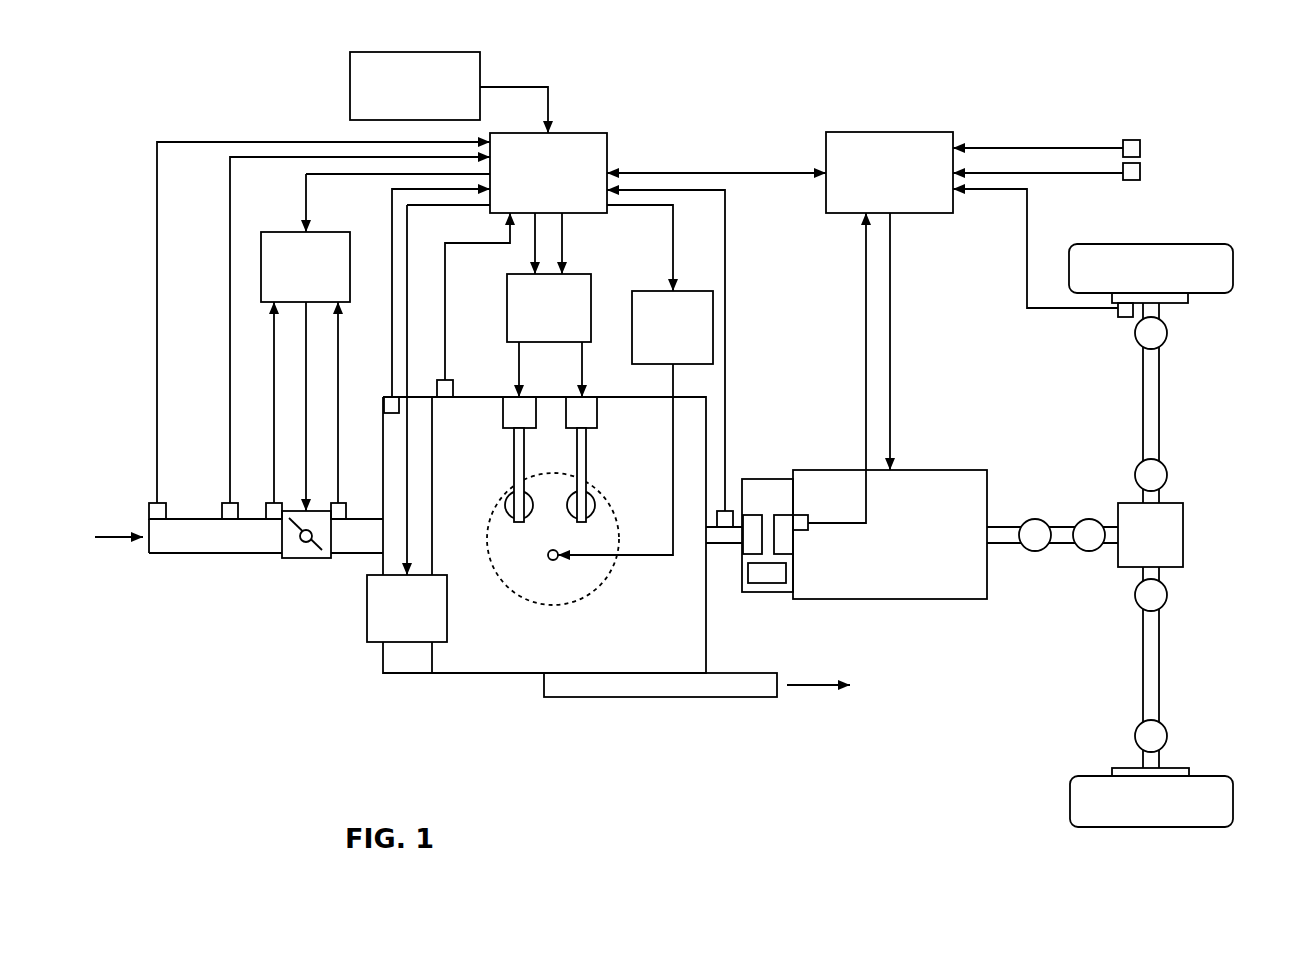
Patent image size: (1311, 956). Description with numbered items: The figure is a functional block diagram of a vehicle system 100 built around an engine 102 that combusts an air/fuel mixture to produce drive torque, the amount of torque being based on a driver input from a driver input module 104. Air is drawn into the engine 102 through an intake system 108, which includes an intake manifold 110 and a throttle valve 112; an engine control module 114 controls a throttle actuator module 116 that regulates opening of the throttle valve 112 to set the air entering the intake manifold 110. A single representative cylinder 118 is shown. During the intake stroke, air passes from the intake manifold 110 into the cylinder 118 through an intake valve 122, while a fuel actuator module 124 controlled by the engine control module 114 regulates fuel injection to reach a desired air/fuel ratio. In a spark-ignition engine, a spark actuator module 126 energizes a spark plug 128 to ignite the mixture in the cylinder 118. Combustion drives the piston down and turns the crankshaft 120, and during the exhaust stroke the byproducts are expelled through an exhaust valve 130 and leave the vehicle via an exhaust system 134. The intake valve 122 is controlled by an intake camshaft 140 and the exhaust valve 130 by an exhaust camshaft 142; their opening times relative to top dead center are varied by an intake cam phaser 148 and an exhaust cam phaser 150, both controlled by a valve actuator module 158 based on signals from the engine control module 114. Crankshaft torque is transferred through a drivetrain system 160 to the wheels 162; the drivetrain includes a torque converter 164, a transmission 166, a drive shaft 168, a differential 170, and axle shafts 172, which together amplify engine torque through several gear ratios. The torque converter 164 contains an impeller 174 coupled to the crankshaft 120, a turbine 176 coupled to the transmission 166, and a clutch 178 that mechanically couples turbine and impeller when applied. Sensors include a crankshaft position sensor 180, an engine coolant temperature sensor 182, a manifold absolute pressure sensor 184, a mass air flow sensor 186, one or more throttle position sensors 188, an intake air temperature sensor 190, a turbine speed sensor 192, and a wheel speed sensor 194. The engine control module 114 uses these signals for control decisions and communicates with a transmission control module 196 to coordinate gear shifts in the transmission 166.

The vehicle system 100 is at (175, 72).
The engine 102 is at (507, 673).
The driver input module 104 is at (350, 85).
The intake system 108 is at (265, 635).
The intake manifold 110 is at (383, 655).
The throttle valve 112 is at (306, 558).
The engine control module 114 is at (607, 140).
The throttle actuator module 116 is at (283, 232).
The cylinder 118 is at (612, 585).
The crankshaft 120 is at (727, 545).
The intake valve 122 is at (505, 505).
The fuel actuator module 124 is at (447, 620).
The spark actuator module 126 is at (645, 291).
The spark plug 128 is at (548, 555).
The exhaust valve 130 is at (595, 505).
The exhaust system 134 is at (723, 728).
The intake camshaft 140 is at (514, 460).
The exhaust camshaft 142 is at (586, 460).
The intake cam phaser 148 is at (503, 410).
The exhaust cam phaser 150 is at (597, 410).
The valve actuator module 158 is at (507, 305).
The drivetrain system 160 is at (865, 623).
The wheels 162 is at (1188, 298).
The torque converter 164 is at (790, 479).
The transmission 166 is at (930, 470).
The drive shaft 168 is at (1062, 543).
The differential 170 is at (1183, 525).
The axle shafts 172 is at (1159, 400).
The impeller 174 is at (1233, 270).
The turbine 176 is at (780, 515).
The clutch 178 is at (766, 583).
The crankshaft position sensor 180 is at (725, 511).
The engine coolant temperature sensor 182 is at (445, 380).
The manifold absolute pressure sensor 184 is at (392, 397).
The mass air flow sensor 186 is at (230, 503).
The throttle position sensor 188 is at (274, 519).
The intake air temperature sensor 190 is at (157, 503).
The turbine speed sensor 192 is at (1140, 148).
The wheel speed sensor 194 is at (1140, 173).
The transmission control module 196 is at (953, 135).